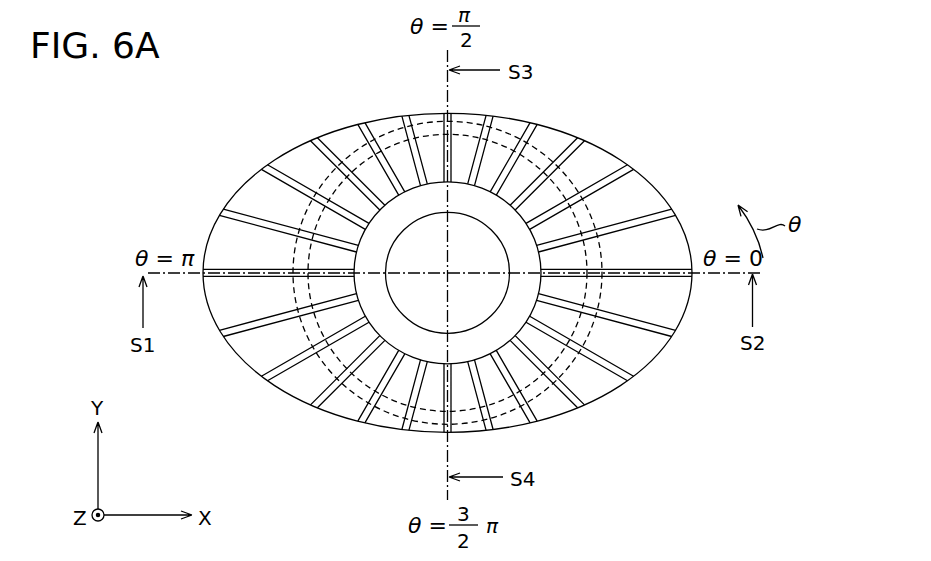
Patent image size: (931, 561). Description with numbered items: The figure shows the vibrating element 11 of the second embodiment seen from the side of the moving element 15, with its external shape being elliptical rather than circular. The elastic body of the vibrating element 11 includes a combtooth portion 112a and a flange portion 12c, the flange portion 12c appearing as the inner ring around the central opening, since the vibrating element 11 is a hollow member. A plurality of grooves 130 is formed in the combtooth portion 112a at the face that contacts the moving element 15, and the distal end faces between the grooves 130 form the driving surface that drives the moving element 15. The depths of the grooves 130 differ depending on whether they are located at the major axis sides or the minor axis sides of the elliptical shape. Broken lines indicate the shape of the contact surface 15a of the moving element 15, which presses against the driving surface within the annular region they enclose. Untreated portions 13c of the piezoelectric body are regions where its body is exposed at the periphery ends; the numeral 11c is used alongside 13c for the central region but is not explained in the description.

The vibrating element 11 is at (618, 79).
The combtooth portion 112a is at (298, 163).
The flange portion 12c is at (418, 203).
The moving element 15 is at (498, 265).
The contact surface 15a is at (583, 168).
The central bore 11c is at (566, 246).
The untreated portions 13c is at (495, 258).
The grooves 130 is at (580, 404).